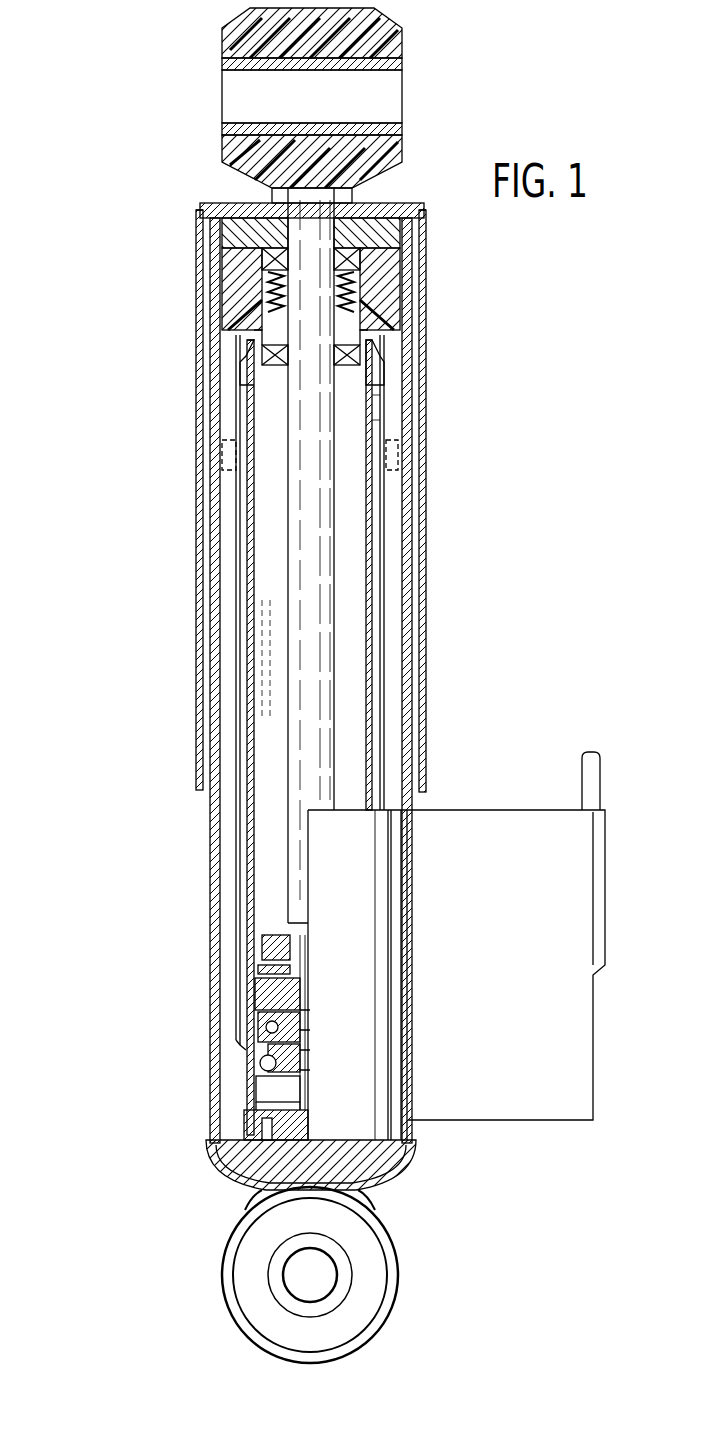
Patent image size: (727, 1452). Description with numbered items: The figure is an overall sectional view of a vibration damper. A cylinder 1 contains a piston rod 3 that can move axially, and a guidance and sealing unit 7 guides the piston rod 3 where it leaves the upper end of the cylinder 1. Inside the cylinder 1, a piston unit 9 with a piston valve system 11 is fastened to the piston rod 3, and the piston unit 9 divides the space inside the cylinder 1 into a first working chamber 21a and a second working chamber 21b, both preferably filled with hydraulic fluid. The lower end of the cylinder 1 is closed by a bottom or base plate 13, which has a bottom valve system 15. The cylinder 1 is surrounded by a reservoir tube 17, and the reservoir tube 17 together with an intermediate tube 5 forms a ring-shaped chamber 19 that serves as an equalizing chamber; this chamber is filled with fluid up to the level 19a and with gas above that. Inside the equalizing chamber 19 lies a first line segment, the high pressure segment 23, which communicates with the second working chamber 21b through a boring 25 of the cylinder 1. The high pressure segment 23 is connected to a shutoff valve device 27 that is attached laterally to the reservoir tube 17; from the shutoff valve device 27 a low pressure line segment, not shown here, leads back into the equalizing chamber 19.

The cylinder 1 is at (238, 822).
The piston rod 3 is at (330, 484).
The intermediate tube 5 is at (388, 686).
The guidance and sealing unit 7 is at (382, 303).
The piston unit 9 is at (262, 988).
The piston valve system 11 is at (265, 1037).
The bottom or base plate 13 is at (220, 1150).
The bottom valve system 15 is at (248, 1172).
The reservoir tube 17 is at (212, 900).
The ring-shaped chamber 19 is at (392, 558).
The level 19a is at (232, 440).
The first working chamber 21a is at (265, 1086).
The second working chamber 21b is at (268, 664).
The high pressure segment 23 is at (372, 398).
The boring 25 is at (380, 380).
The shutoff valve device 27 is at (509, 797).